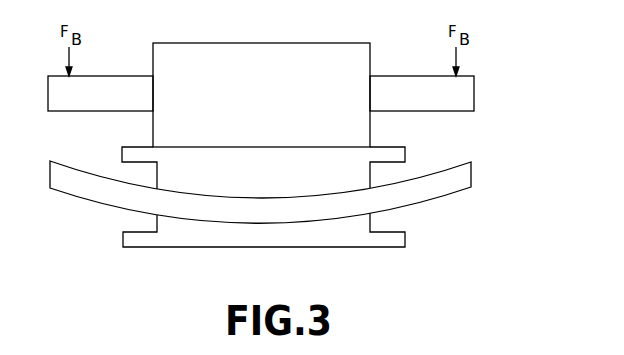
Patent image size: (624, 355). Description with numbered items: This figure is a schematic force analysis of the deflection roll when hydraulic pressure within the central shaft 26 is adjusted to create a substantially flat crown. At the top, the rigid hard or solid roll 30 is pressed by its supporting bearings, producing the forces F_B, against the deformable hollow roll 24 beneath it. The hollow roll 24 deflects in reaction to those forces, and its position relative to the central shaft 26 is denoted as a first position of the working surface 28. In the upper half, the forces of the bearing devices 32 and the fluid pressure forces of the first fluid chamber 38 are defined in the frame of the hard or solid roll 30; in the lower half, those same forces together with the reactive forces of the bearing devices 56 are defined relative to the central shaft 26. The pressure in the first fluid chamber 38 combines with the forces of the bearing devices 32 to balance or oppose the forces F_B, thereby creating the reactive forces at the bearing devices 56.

The hard or solid roll 30 is at (278, 82).
The hollow roll 24 is at (390, 171).
The central shaft 26 is at (460, 175).
The working surface 28 is at (313, 147).
The bearing devices 32 is at (352, 185).
The first fluid chamber 38 is at (313, 190).
The bearing devices 56 is at (70, 202).